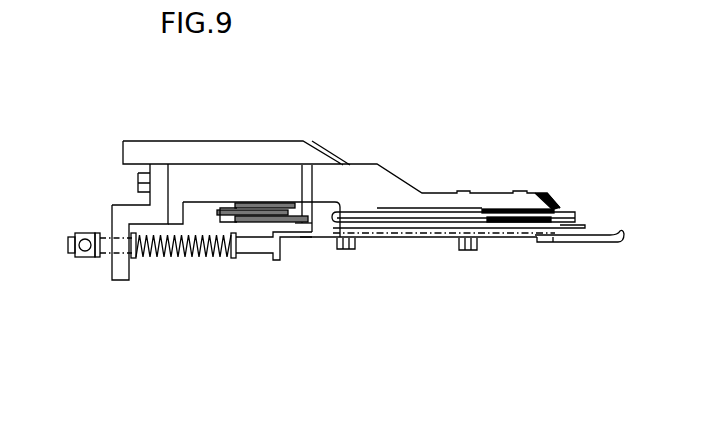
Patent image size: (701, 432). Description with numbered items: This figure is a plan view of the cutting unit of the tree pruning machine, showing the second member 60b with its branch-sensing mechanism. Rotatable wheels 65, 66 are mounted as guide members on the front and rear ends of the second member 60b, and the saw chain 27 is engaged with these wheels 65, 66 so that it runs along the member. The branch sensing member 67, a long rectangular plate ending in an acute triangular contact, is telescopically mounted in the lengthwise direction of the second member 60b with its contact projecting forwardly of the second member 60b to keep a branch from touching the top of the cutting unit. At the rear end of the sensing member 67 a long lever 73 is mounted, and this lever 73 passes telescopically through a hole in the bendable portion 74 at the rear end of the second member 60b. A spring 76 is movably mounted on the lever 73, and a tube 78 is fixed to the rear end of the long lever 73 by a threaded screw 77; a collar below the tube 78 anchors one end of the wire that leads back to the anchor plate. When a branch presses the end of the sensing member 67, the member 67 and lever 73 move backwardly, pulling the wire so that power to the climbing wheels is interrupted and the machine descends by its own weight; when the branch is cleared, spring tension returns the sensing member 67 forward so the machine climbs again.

The saw chain 27 is at (373, 213).
The second member 60b is at (403, 182).
The rotatable wheel 65 is at (553, 212).
The rotatable wheel 66 is at (237, 203).
The branch sensing member 67 is at (561, 243).
The long lever 73 is at (249, 254).
The bendable portion 74 is at (110, 213).
The spring 76 is at (168, 258).
The threaded screw 77 is at (87, 252).
The tube 78 is at (78, 251).